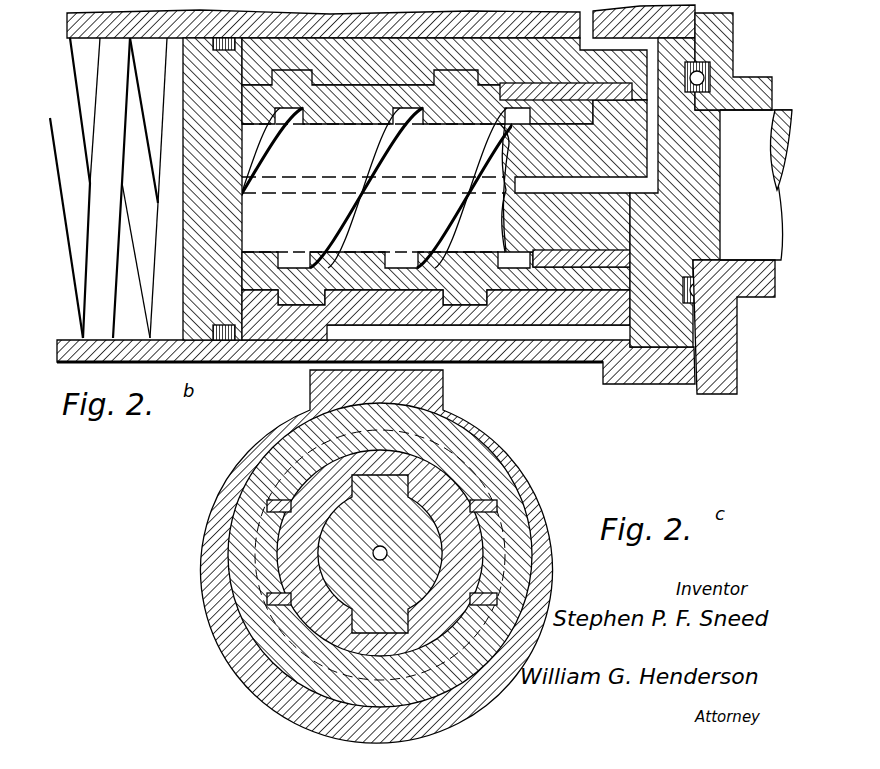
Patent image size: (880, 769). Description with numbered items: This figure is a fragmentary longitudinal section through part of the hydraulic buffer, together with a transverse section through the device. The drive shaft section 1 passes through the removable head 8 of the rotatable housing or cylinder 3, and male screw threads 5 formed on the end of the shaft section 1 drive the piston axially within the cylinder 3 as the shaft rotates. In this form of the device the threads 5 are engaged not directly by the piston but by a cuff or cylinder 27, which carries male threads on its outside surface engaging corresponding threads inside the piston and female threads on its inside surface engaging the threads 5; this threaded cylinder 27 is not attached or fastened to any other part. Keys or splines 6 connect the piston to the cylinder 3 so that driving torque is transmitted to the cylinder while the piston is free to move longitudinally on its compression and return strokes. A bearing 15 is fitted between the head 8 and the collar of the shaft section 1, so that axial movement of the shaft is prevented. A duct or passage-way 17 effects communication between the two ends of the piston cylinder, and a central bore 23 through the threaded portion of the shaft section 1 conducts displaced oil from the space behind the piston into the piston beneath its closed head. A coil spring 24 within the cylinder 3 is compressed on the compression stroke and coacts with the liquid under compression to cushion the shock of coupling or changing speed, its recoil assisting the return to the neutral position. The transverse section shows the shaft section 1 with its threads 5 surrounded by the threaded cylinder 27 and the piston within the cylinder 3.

In FIG. 2B, the shaft section 1 is at (773, 111).
In FIG. 2C, the shaft section 1 is at (455, 481).
In FIG. 2B, the housing or cylinder 3 is at (643, 385).
In FIG. 2C, the housing or cylinder 3 is at (535, 470).
In FIG. 2B, the male screw threads 5 is at (432, 245).
In FIG. 2B, the keys or splines 6 is at (545, 16).
In FIG. 2B, the head 8 is at (727, 330).
In FIG. 2B, the bearing 15 is at (712, 68).
In FIG. 2B, the duct or passage-way 17 is at (732, 43).
In FIG. 2B, the central bore 23 is at (532, 192).
In FIG. 2C, the central bore 23 is at (372, 553).
In FIG. 2B, the coil spring 24 is at (100, 188).
In FIG. 2B, the cuff or cylinder 27 is at (343, 280).
In FIG. 2C, the cuff or cylinder 27 is at (388, 553).